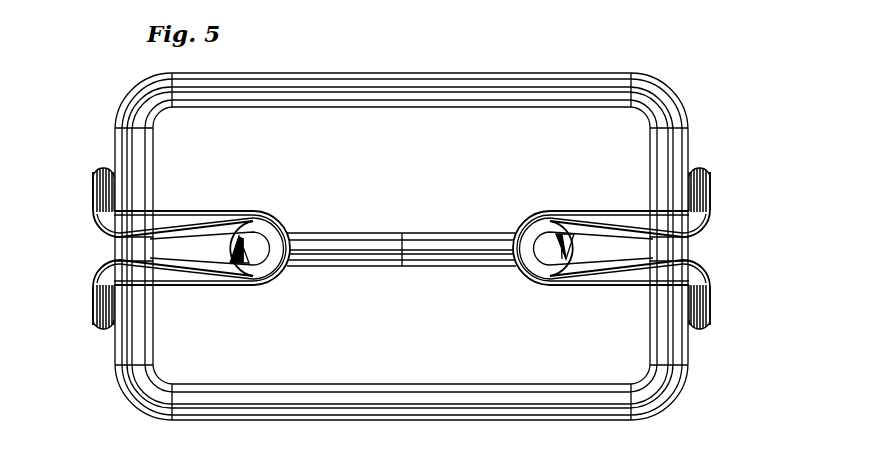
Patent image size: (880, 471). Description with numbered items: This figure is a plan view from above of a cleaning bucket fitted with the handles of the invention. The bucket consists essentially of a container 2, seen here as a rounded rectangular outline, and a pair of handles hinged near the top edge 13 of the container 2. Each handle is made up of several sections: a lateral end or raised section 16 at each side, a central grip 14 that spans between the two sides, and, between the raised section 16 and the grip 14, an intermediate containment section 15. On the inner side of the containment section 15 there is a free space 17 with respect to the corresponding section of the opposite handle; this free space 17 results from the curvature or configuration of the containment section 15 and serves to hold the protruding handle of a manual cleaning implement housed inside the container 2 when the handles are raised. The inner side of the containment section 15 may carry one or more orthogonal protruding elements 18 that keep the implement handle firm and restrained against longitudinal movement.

The container 2 is at (596, 366).
The top edge 13 is at (684, 108).
The grip 14 is at (445, 240).
The containment section 15 is at (218, 226).
The raised section 16 is at (92, 203).
The free space 17 is at (258, 236).
The tab 18 is at (236, 253).